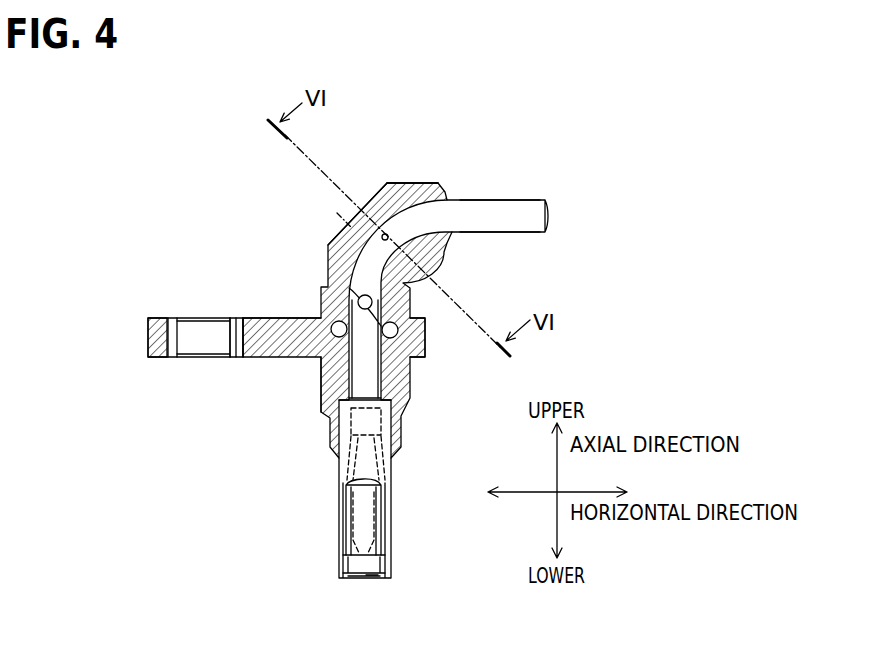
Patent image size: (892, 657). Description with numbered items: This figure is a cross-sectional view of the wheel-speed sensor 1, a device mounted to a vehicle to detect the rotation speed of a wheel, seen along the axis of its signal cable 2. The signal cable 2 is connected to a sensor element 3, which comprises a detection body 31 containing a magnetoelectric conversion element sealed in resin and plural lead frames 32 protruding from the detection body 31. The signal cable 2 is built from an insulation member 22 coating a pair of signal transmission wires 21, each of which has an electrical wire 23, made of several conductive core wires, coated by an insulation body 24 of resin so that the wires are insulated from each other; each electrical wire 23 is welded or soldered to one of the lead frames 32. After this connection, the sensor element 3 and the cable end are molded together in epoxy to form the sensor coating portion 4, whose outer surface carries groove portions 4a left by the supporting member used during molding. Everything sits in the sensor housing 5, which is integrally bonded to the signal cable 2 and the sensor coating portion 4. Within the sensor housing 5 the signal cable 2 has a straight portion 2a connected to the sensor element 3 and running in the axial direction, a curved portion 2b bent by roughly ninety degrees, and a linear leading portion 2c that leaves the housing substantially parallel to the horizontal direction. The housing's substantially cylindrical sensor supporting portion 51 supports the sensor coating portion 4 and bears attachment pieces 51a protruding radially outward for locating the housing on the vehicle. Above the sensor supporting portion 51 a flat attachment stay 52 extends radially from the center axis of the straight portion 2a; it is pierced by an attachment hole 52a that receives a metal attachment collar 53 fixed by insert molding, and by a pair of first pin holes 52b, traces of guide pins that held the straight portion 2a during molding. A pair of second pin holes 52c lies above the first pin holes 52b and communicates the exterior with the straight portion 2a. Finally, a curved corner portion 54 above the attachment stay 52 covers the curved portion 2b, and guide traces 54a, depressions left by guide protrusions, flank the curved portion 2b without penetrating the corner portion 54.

The wheel-speed sensor 1 is at (166, 171).
The signal cable 2 is at (528, 200).
The straight portion 2a is at (408, 380).
The curved portion 2b is at (398, 198).
The leading portion 2c is at (478, 233).
The sensor element 3 is at (372, 583).
The sensor coating portion 4 is at (388, 508).
The groove portions 4a is at (340, 555).
The sensor housing 5 is at (329, 260).
The signal transmission wires 21 is at (338, 440).
The insulation member 22 is at (337, 400).
The electrical wire 23 is at (339, 493).
The insulation body 24 is at (340, 470).
The detection body 31 is at (348, 588).
The lead frames 32 is at (340, 533).
The sensor supporting portion 51 is at (412, 407).
The attachment pieces 51a is at (327, 366).
The attachment stay 52 is at (148, 333).
The attachment hole 52a is at (237, 338).
The first pin holes 52b is at (378, 322).
The second pin holes 52c is at (357, 297).
The attachment collar 53 is at (172, 358).
The corner portion 54 is at (376, 190).
The guide traces 54a is at (337, 213).